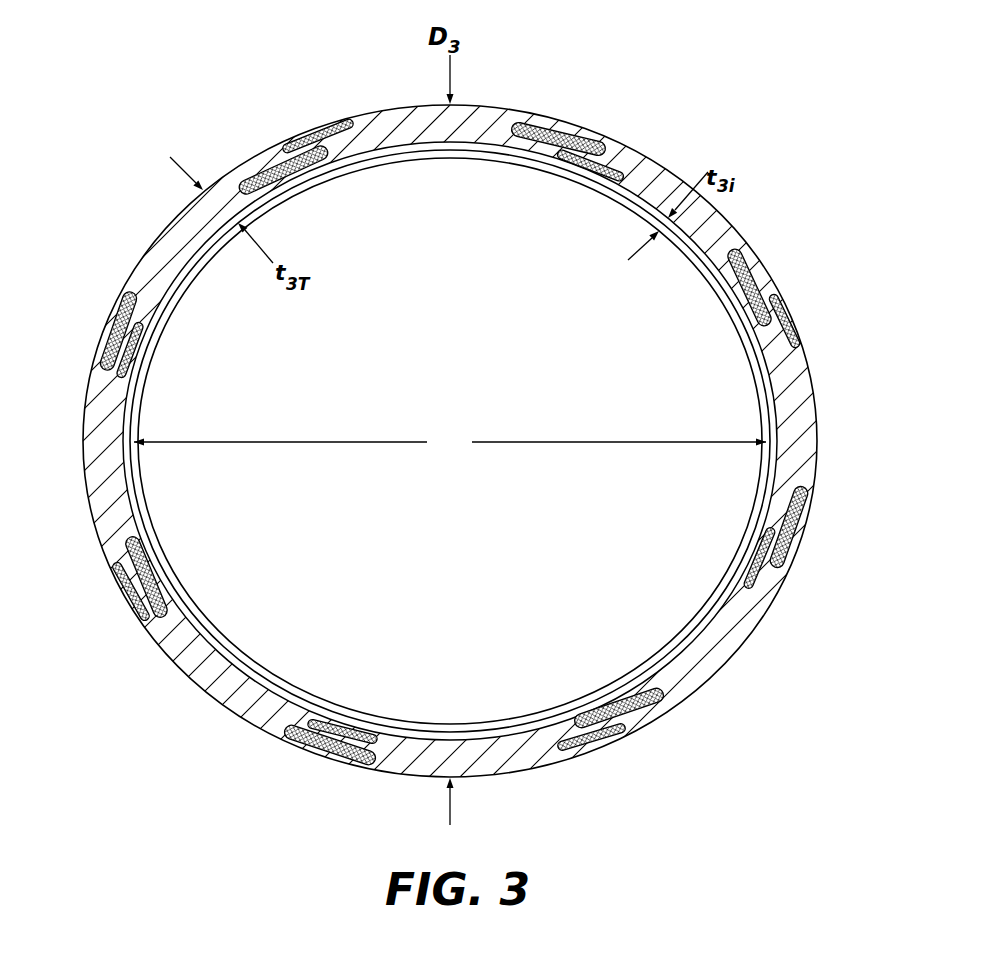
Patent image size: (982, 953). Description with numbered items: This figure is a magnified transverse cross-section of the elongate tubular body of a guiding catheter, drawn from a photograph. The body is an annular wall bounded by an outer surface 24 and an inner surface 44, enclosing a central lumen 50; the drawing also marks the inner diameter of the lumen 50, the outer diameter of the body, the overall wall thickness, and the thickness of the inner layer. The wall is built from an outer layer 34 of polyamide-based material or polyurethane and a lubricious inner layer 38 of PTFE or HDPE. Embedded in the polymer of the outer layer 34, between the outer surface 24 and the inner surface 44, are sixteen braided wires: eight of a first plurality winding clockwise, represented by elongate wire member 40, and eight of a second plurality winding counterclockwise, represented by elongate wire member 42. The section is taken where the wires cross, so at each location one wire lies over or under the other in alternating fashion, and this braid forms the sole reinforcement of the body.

The outer surface 24 is at (817, 462).
The outer layer 34 is at (107, 396).
The inner layer 38 is at (363, 163).
The elongate wire member 40 is at (574, 128).
The elongate wire member 42 is at (319, 130).
The inner surface 44 is at (236, 657).
The lumen 50 is at (345, 527).